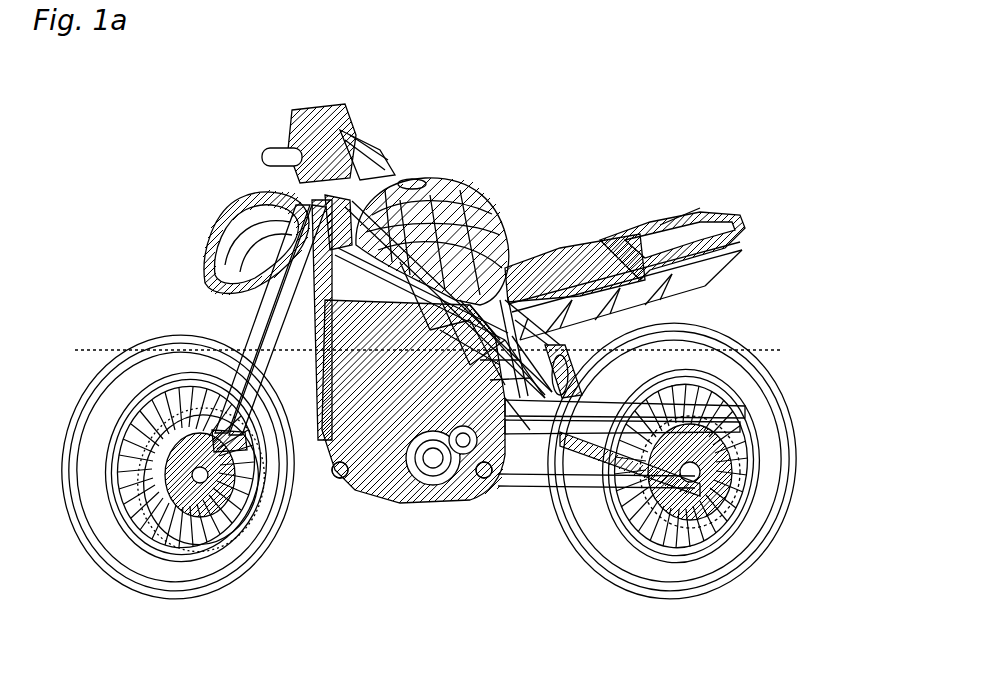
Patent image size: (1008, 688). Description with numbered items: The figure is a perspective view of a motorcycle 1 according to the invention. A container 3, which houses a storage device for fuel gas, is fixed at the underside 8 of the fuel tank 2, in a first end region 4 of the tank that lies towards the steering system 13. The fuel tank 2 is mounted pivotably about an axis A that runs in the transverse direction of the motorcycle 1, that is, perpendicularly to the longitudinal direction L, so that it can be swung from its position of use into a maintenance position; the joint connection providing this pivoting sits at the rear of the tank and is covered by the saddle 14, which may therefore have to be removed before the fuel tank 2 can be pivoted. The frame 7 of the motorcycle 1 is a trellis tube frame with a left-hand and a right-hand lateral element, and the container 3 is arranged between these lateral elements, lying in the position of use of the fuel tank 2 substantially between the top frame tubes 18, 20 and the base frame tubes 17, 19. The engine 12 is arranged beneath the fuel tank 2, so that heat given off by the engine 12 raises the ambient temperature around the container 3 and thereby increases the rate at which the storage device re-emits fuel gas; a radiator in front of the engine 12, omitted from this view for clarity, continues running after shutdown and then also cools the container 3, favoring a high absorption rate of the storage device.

The motorcycle 1 is at (752, 617).
The fuel tank 2 is at (497, 238).
The container 3 is at (225, 240).
The first end region 4 is at (300, 300).
The frame 7 is at (745, 310).
The underside 8 is at (318, 432).
The engine 12 is at (394, 497).
The steering system 13 is at (382, 152).
The saddle 14 is at (582, 252).
The base frame tube 17 is at (336, 480).
The top frame tube 18 is at (486, 478).
The base frame tube 19 is at (336, 480).
The top frame tube 20 is at (486, 478).
The axis A is at (680, 215).
The longitudinal direction L is at (115, 348).